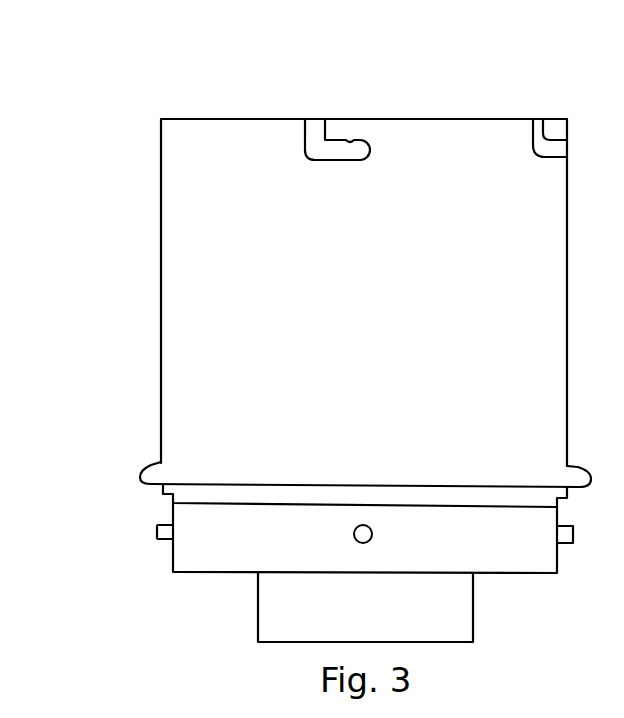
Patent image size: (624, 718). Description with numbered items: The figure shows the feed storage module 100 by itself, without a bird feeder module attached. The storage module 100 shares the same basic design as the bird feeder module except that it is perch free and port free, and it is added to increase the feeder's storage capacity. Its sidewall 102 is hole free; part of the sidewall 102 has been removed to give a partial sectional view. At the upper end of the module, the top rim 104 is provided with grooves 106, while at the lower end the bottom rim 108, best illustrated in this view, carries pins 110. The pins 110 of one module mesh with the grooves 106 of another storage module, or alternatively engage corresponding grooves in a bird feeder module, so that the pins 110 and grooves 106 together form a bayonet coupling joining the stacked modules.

The storage module 100 is at (132, 311).
The sidewall 102 is at (161, 350).
The top rim 104 is at (161, 135).
The grooves 106 is at (305, 119).
The bottom rim 108 is at (173, 550).
The pins 110 is at (157, 530).